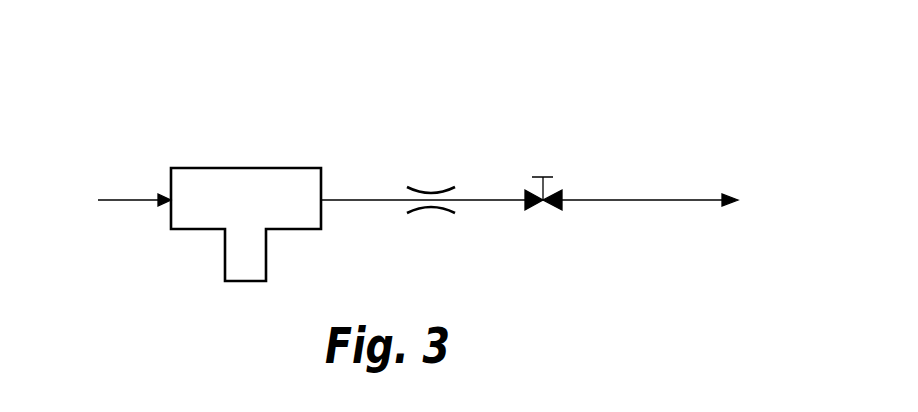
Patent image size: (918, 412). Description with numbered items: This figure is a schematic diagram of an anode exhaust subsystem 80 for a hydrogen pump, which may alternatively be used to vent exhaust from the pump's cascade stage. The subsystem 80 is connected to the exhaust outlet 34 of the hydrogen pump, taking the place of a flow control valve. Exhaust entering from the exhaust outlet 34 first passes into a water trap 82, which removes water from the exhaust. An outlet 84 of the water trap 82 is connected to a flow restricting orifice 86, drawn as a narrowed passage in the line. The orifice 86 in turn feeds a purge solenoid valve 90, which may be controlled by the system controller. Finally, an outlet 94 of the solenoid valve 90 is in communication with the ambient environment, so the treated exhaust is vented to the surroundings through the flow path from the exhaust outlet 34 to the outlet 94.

The subsystem 80 is at (563, 95).
The exhaust outlet 34 is at (143, 200).
The water trap 82 is at (238, 168).
The outlet 84 is at (347, 200).
The flow restricting orifice 86 is at (432, 184).
The purge solenoid valve 90 is at (560, 182).
The outlet 94 is at (665, 200).